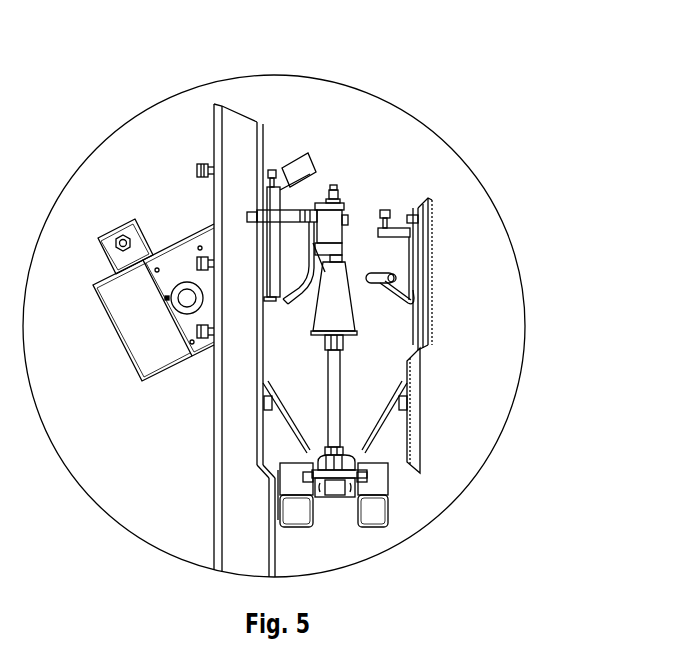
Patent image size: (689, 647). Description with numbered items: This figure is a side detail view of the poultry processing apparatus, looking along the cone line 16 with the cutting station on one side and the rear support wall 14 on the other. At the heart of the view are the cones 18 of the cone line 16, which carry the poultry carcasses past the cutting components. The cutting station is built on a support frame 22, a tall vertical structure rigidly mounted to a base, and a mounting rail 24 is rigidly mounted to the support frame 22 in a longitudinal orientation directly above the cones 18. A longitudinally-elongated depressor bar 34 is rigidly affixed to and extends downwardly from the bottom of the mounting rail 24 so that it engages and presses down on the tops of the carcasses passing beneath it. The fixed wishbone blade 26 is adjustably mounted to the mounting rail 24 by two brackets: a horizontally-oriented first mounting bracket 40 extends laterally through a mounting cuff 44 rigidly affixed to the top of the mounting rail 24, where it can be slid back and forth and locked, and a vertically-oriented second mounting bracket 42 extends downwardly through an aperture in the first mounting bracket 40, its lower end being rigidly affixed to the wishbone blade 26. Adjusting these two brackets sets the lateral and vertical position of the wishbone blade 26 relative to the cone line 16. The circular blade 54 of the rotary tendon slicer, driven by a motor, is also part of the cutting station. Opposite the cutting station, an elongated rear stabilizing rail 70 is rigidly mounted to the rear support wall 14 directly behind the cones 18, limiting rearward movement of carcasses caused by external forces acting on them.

The support frame 22 is at (233, 425).
The second mounting bracket 42 is at (274, 200).
The first mounting bracket 40 is at (280, 217).
The mounting rail 24 is at (343, 212).
The mounting cuff 44 is at (328, 228).
The depressor bar 34 is at (343, 258).
The wishbone blade 26 is at (288, 283).
The cones 18 is at (338, 318).
The poultry cone line 16 is at (360, 407).
The circular blade 54 is at (382, 227).
The rear support wall 14 is at (427, 242).
The rear stabilizing rail 70 is at (395, 280).